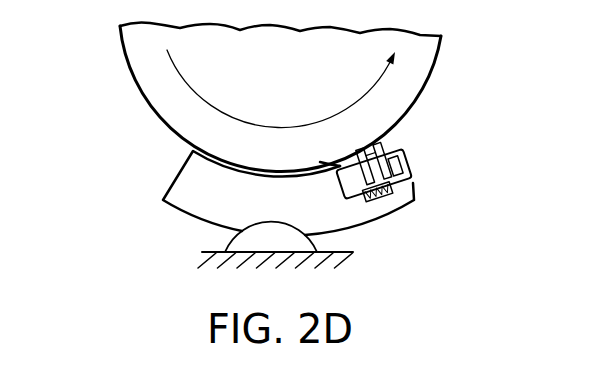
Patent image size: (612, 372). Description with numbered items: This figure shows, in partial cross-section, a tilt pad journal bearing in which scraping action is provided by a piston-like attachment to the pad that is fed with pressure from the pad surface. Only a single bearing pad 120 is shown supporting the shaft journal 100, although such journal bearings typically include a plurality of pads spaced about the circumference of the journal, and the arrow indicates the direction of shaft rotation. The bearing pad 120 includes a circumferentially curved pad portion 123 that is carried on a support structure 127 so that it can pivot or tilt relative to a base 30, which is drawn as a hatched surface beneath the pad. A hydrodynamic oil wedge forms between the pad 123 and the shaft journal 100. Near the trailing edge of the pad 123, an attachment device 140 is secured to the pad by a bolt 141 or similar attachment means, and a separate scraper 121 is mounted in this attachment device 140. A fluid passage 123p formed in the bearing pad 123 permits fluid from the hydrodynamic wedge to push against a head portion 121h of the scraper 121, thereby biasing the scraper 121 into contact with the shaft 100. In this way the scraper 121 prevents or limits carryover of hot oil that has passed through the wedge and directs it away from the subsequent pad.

The shaft journal 100 is at (297, 96).
The bearing pad 120 is at (238, 176).
The circumferentially curved pad portion 123 is at (288, 193).
The fluid passage 123p is at (342, 190).
The support structure 127 is at (313, 245).
The base 30 is at (200, 262).
The scraper 121 is at (389, 142).
The head portion 121h is at (400, 155).
The attachment device 140 is at (396, 199).
The bolt 141 is at (399, 186).